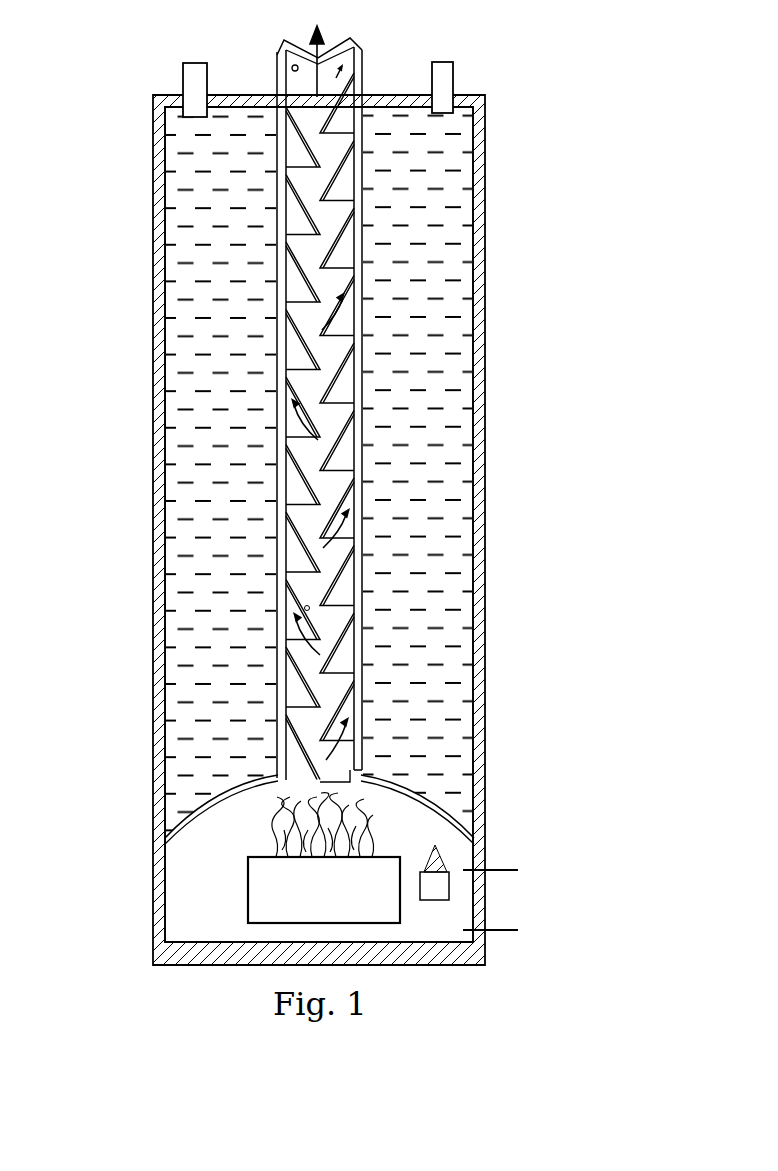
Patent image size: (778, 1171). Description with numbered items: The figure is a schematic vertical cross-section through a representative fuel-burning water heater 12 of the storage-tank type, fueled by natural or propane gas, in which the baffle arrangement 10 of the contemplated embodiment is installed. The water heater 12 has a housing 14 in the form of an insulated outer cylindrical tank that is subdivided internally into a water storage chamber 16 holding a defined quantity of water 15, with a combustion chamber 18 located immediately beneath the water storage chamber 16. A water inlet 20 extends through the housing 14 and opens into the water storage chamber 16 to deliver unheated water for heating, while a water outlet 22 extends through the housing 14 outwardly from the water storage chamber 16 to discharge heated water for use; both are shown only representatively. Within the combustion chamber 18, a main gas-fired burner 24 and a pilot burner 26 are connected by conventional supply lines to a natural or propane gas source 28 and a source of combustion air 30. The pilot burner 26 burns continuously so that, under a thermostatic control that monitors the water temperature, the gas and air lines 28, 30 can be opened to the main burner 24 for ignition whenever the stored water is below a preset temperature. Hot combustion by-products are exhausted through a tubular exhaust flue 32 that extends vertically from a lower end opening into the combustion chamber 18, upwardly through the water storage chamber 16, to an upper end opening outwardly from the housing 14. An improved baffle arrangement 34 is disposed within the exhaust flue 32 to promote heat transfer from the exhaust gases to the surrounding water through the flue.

The baffle arrangement 10 is at (345, 241).
The water heater 12 is at (495, 418).
The housing 14 is at (485, 585).
The water 15 is at (250, 283).
The water storage chamber 16 is at (182, 610).
The combustion chamber 18 is at (202, 868).
The water inlet 20 is at (183, 80).
The water outlet 22 is at (453, 72).
The main gas-fired burner 24 is at (263, 897).
The pilot burner 26 is at (435, 888).
The natural or propane gas source 28 is at (518, 930).
The source of combustion air 30 is at (518, 870).
The tubular exhaust flue 32 is at (280, 340).
The baffle arrangement 34 is at (310, 318).